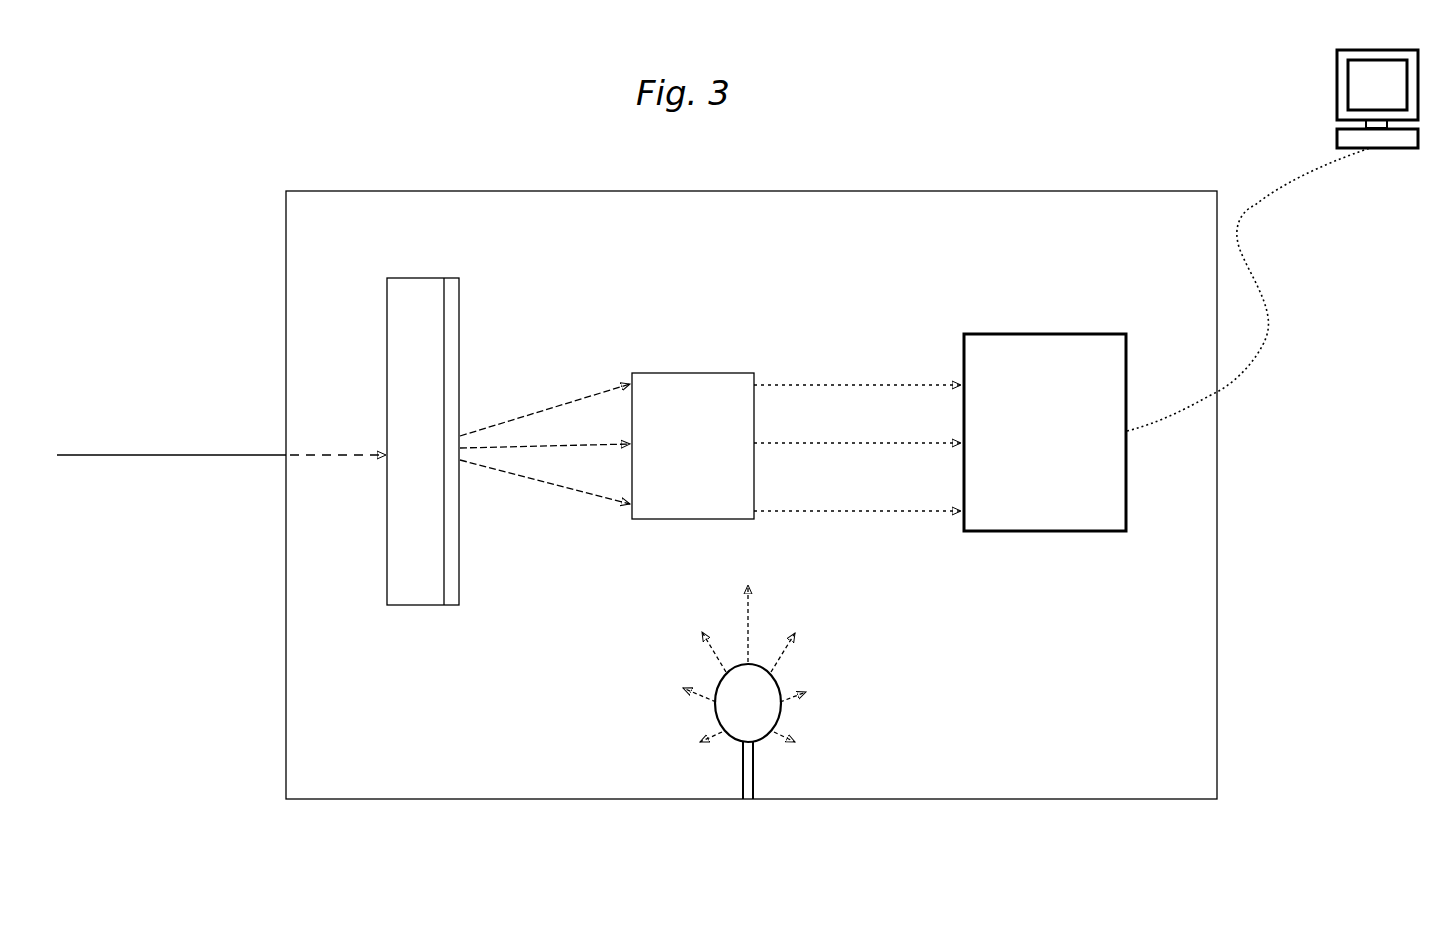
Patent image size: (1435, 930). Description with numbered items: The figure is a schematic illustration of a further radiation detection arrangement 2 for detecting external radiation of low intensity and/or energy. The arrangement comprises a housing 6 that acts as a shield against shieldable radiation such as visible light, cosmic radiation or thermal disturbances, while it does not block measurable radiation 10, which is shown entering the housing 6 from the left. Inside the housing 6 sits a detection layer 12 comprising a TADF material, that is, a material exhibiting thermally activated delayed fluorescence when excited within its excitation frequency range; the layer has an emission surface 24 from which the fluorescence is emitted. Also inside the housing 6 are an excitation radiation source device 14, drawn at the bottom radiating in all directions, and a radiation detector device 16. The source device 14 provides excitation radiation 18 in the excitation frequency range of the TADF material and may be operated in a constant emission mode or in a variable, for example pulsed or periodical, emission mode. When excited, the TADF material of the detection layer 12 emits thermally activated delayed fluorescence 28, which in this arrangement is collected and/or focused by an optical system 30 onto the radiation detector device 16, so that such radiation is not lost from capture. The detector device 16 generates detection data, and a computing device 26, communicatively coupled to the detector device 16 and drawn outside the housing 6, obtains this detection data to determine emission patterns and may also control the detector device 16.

The radiation detection arrangement 2 is at (878, 86).
The housing 6 is at (845, 186).
The measurable radiation 10 is at (315, 456).
The detection layer 12 is at (430, 276).
The emission surface 24 is at (462, 338).
The thermally activated delayed fluorescence 28 is at (555, 448).
The optical system 30 is at (698, 464).
The radiation detector device 16 is at (1044, 449).
The excitation radiation source device 14 is at (758, 733).
The excitation radiation 18 is at (787, 648).
The computing device 26 is at (1384, 150).